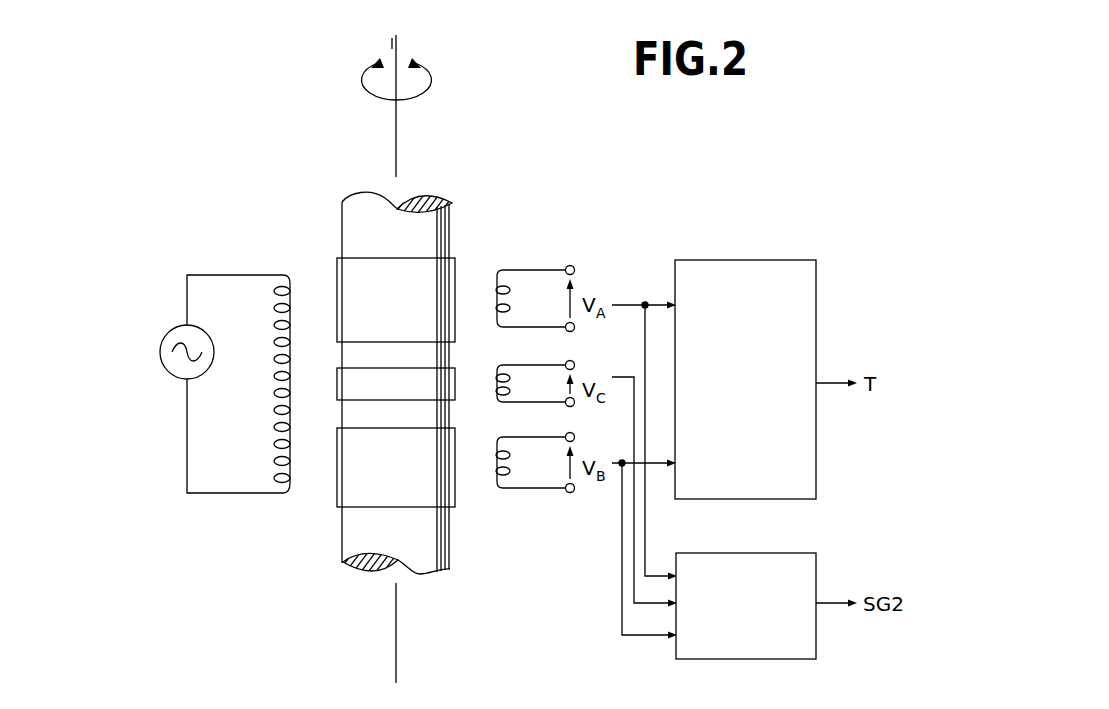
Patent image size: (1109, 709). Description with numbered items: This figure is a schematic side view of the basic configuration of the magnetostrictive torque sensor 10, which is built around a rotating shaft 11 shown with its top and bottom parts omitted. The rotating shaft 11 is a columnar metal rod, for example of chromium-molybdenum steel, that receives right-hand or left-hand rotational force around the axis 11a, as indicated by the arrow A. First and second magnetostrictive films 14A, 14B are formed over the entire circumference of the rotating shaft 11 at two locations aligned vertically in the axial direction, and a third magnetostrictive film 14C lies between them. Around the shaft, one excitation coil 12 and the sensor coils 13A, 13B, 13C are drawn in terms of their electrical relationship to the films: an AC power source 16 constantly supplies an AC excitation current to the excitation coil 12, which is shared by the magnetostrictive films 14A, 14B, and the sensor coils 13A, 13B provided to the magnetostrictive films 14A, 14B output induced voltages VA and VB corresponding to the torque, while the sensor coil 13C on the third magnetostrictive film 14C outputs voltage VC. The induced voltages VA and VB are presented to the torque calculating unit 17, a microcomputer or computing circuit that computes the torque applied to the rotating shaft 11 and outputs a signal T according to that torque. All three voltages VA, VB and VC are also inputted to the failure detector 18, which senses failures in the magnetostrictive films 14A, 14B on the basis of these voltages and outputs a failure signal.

The magnetostrictive torque sensor 10 is at (526, 167).
The rotating shaft 11 is at (450, 213).
The axis 11a is at (398, 43).
The arrow A is at (430, 78).
The excitation coil 12 is at (292, 300).
The sensor coil 13A is at (495, 296).
The sensor coil 13B is at (495, 461).
The sensor coil 13C is at (503, 388).
The first magnetostrictive film 14A is at (437, 298).
The second magnetostrictive film 14B is at (427, 492).
The third magnetostrictive film 14C is at (456, 385).
The AC power source 16 is at (160, 352).
The torque calculating unit 17 is at (746, 260).
The failure detector 18 is at (748, 553).